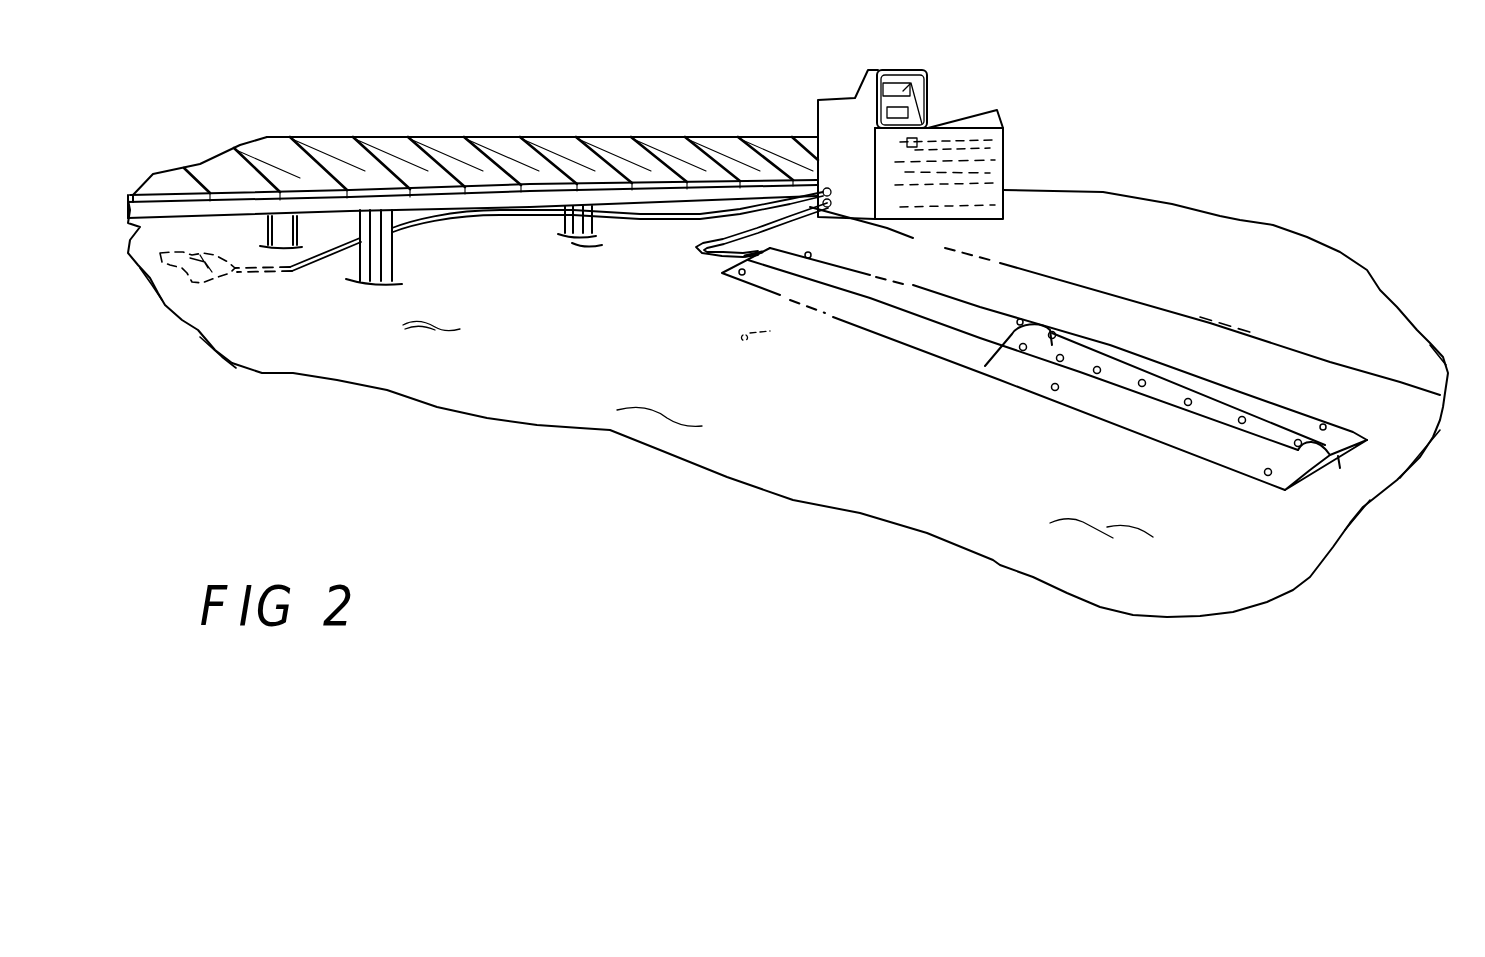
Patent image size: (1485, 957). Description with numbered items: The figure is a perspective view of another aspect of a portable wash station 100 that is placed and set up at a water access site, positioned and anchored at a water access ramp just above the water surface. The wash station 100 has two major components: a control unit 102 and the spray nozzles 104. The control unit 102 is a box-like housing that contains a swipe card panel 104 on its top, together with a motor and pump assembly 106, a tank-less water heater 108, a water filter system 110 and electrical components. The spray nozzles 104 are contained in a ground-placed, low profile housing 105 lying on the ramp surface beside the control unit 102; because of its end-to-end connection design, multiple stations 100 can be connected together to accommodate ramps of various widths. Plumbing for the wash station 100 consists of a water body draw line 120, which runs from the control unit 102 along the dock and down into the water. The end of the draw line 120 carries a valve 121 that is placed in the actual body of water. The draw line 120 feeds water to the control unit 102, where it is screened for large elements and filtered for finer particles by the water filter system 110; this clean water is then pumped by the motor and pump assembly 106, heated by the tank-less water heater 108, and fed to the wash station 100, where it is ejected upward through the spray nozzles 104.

The wash station 100 is at (848, 397).
The control unit 102 is at (894, 155).
The spray nozzle 104 is at (1142, 390).
The low profile housing 105 is at (1055, 390).
The motor and pump assembly 106 is at (1003, 173).
The tank-less water heater 108 is at (1003, 197).
The water filter system 110 is at (1003, 148).
The water body draw line 120 is at (320, 258).
The valve 121 is at (187, 273).